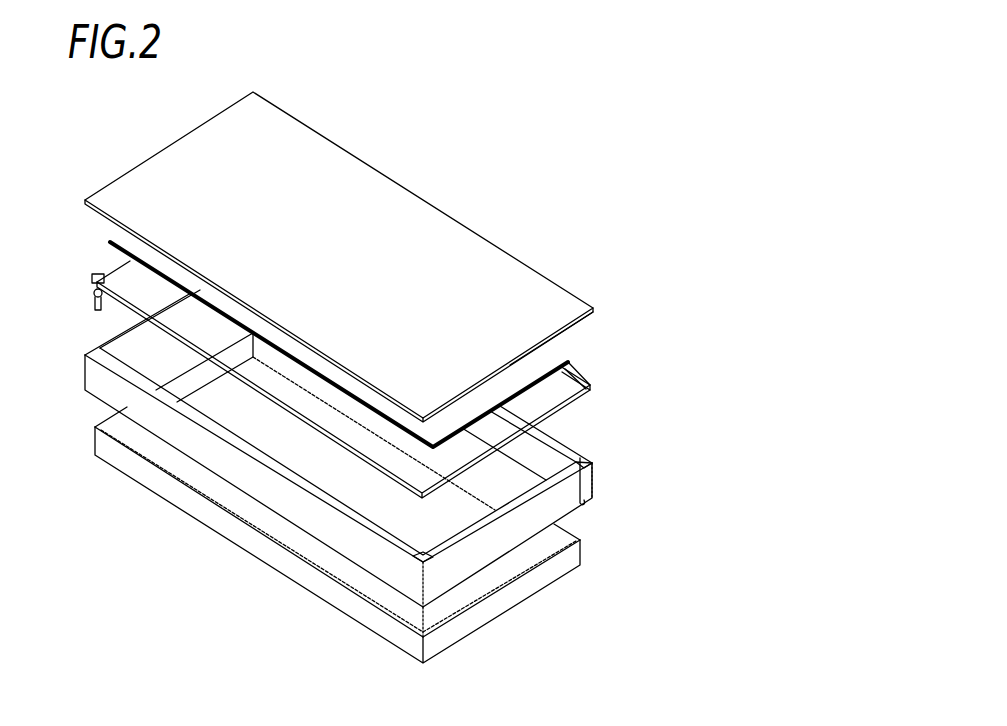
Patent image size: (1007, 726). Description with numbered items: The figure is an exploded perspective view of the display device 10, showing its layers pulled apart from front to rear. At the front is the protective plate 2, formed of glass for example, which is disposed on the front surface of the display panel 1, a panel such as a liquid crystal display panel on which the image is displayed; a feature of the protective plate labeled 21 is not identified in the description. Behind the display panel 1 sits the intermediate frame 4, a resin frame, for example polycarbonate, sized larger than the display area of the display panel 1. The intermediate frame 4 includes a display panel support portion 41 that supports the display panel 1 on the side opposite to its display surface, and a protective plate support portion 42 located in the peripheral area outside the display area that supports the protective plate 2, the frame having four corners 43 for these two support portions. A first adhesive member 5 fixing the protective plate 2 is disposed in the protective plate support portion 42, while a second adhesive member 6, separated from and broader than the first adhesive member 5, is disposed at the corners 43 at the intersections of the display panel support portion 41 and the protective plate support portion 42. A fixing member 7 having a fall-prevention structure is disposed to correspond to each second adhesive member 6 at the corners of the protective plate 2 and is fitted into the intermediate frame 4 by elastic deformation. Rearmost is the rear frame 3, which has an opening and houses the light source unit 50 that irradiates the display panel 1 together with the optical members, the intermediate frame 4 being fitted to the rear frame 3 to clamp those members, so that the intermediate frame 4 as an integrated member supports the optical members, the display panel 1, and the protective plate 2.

The display device 10 is at (158, 572).
The display panel 1 is at (552, 360).
The protective plate 2 is at (425, 212).
The edge portion of cover plate 21 is at (560, 310).
The rear frame 3 is at (146, 475).
The intermediate frame 4 is at (372, 563).
The display panel support portion 41 is at (570, 460).
The protective plate support portion 42 is at (567, 452).
The corners 43 is at (424, 567).
The first adhesive member 5 is at (102, 273).
The second adhesive member 6 is at (93, 278).
The fixing member 7 is at (97, 303).
The light source unit 50 is at (648, 402).